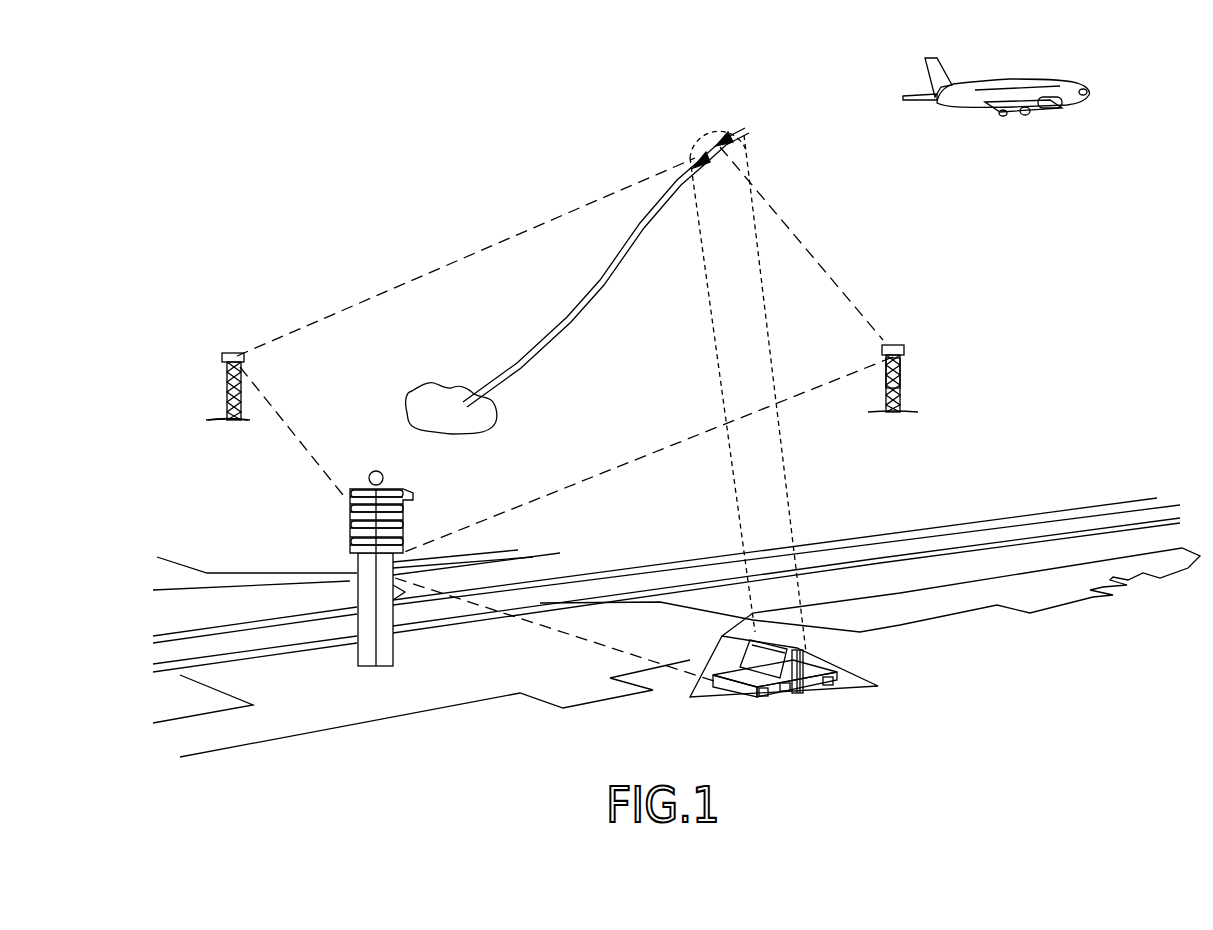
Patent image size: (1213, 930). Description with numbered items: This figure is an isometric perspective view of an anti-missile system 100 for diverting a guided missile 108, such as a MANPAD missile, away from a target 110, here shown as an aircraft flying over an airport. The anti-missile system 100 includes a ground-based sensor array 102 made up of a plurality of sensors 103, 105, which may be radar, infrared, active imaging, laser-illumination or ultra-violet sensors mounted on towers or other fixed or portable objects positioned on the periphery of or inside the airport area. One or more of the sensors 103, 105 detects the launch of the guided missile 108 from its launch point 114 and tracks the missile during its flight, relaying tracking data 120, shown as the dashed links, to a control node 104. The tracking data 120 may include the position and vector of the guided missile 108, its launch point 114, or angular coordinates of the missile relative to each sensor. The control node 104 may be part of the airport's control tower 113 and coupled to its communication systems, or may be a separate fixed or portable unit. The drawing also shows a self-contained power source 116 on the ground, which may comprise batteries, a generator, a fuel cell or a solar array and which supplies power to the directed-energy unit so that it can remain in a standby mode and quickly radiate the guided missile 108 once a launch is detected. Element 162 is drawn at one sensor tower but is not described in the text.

The anti-missile system 100 is at (119, 124).
The ground-based sensor array 102 is at (228, 424).
The sensor 103 is at (232, 352).
The control node 104 is at (344, 520).
The sensor 105 is at (898, 345).
The guided missile 108 is at (706, 125).
The target 110 is at (1045, 108).
The control tower 113 is at (375, 470).
The launch point 114 is at (450, 381).
The self-contained power source 116 is at (760, 700).
The tracking data 120 is at (300, 440).
The antenna 162 is at (914, 372).